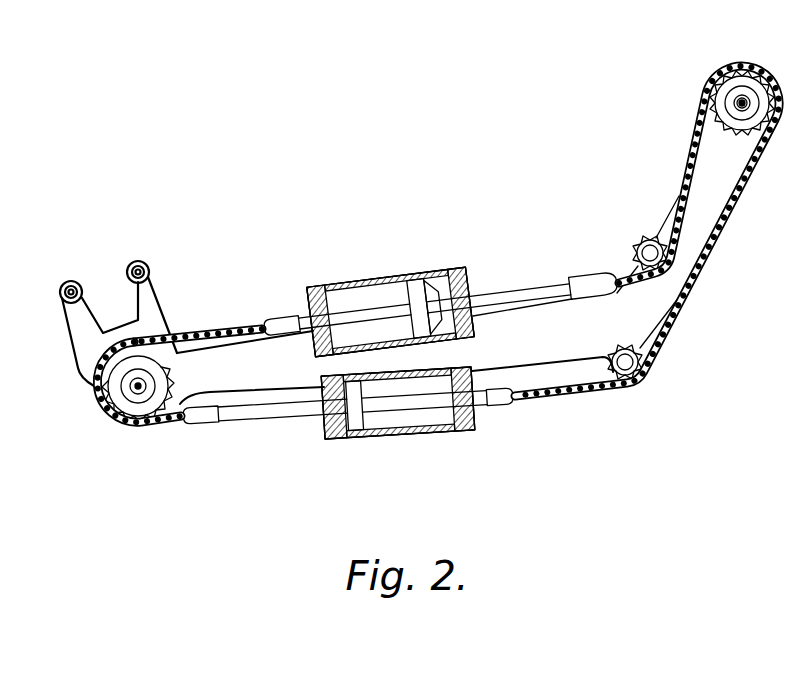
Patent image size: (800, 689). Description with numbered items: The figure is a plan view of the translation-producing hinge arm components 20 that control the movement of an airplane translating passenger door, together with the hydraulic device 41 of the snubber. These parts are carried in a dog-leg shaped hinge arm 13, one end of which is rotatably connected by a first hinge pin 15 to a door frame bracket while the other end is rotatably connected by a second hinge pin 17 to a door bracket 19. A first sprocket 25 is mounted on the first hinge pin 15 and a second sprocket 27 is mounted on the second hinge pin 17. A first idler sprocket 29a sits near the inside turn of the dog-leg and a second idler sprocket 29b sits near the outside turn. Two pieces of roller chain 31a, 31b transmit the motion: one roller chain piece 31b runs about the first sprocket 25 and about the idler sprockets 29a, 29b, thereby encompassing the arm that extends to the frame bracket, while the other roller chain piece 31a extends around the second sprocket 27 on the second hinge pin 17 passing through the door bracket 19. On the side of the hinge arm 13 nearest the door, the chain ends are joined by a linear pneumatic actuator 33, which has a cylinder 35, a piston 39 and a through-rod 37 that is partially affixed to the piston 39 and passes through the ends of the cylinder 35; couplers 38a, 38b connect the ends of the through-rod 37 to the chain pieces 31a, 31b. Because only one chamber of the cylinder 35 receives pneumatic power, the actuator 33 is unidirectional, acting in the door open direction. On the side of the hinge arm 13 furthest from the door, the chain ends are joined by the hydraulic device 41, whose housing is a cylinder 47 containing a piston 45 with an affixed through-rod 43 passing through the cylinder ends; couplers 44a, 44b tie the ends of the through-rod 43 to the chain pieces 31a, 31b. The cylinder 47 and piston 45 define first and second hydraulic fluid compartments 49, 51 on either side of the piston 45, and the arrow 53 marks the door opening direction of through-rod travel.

The hinge arm 13 is at (558, 353).
The first hinge pin 15 is at (738, 97).
The second hinge pin 17 is at (137, 392).
The door bracket 19 is at (153, 282).
The translation-producing hinge arm components 20 is at (413, 232).
The first sprocket 25 is at (750, 80).
The second sprocket 27 is at (117, 402).
The first idler sprocket 29a is at (646, 238).
The second idler sprocket 29b is at (640, 378).
The roller chain piece 31a is at (203, 330).
The roller chain piece 31b is at (716, 252).
The linear pneumatic actuator 33 is at (356, 282).
The cylinder 35 is at (473, 272).
The through-rod 37 is at (540, 290).
The coupler 38a is at (282, 320).
The coupler 38b is at (585, 280).
The piston 39 is at (418, 276).
The hydraulic device 41 is at (318, 450).
The through-rod 43 is at (255, 418).
The coupler 44a is at (200, 424).
The coupler 44b is at (504, 398).
The piston 45 is at (348, 432).
The cylinder 47 is at (467, 425).
The first hydraulic fluid compartment 49 is at (405, 420).
The second hydraulic fluid compartment 51 is at (330, 425).
The arrow 53 is at (640, 492).